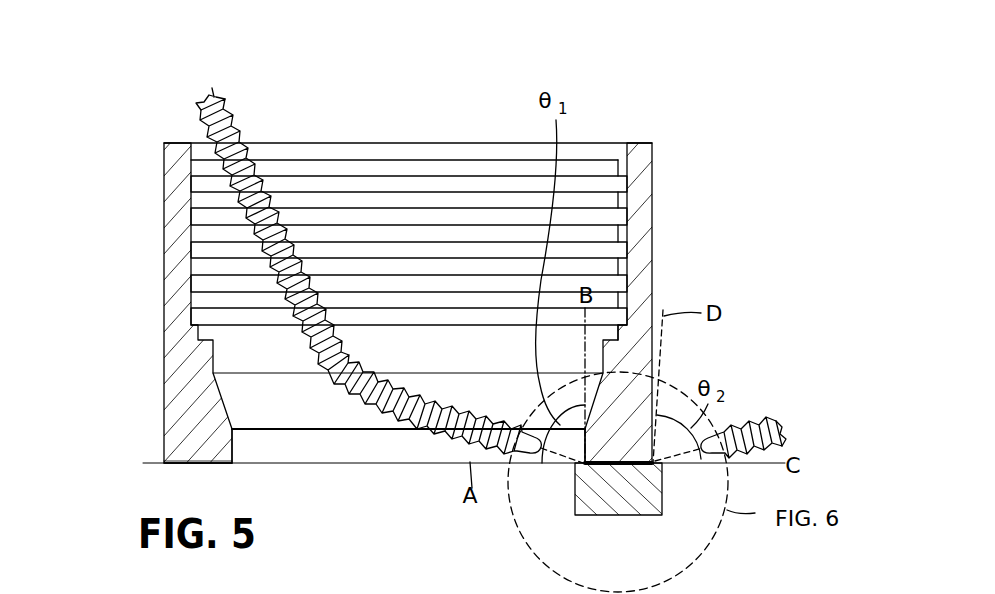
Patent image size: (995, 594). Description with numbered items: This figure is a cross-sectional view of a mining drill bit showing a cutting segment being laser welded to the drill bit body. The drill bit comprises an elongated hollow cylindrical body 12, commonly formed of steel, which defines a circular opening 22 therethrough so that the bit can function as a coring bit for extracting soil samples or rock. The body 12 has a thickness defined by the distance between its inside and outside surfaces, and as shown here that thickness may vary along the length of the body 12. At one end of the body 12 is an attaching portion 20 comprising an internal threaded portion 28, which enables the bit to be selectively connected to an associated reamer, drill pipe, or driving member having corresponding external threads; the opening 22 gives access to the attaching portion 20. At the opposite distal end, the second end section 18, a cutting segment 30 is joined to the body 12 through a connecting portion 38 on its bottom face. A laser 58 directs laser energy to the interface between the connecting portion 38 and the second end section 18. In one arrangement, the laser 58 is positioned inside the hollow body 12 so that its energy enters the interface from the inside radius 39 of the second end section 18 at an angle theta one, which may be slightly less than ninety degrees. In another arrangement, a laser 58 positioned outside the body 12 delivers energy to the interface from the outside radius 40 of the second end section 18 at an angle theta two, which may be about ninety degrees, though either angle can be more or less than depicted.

The elongated hollow cylindrical body 12 is at (163, 192).
The second end section 18 is at (185, 465).
The attaching portion 20 is at (400, 120).
The circular opening 22 is at (377, 480).
The internal threaded portion 28 is at (322, 185).
The cutting segment 30 is at (600, 503).
The connecting portion 38 is at (615, 462).
The inside radius 39 is at (250, 459).
The outside radius 40 is at (152, 463).
The laser 58 is at (503, 416).